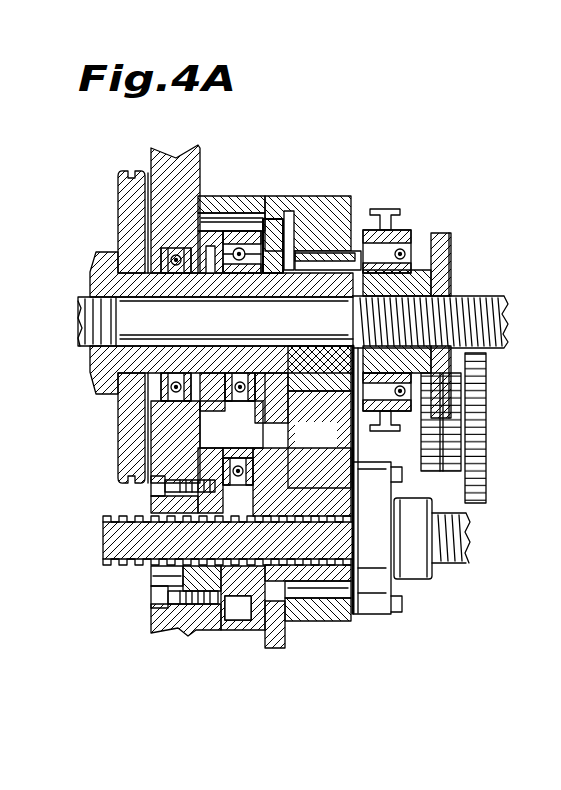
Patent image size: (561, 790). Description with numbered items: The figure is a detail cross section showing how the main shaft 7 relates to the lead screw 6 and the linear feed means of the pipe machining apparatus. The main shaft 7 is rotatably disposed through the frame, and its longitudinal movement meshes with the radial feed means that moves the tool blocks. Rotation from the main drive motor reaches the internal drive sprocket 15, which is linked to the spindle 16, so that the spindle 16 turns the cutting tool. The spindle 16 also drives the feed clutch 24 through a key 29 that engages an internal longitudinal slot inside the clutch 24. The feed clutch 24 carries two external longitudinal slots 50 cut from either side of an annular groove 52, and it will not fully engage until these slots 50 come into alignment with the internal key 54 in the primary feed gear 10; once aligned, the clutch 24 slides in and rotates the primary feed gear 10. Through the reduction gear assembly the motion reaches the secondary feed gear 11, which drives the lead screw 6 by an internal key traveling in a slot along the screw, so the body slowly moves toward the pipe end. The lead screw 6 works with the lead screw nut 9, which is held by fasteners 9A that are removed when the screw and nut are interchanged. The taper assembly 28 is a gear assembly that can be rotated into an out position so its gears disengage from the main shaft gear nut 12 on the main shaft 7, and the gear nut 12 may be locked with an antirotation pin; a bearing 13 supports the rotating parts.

The lead screw 6 is at (118, 540).
The main shaft 7 is at (483, 285).
The lead screw nut 9 is at (422, 572).
The fasteners 9A is at (160, 620).
The primary feed gear 10 is at (250, 223).
The secondary feed gear 11 is at (276, 640).
The main shaft gear nut 12 is at (445, 235).
The bearing assembly 13 is at (400, 222).
The internal drive sprocket 15 is at (116, 452).
The spindle 16 is at (83, 266).
The feed clutch 24 is at (290, 240).
The taper assembly 28 is at (470, 458).
The key 29 is at (330, 348).
The external longitudinal slots 50 is at (310, 263).
The annular groove 52 is at (322, 368).
The internal key 54 is at (318, 243).